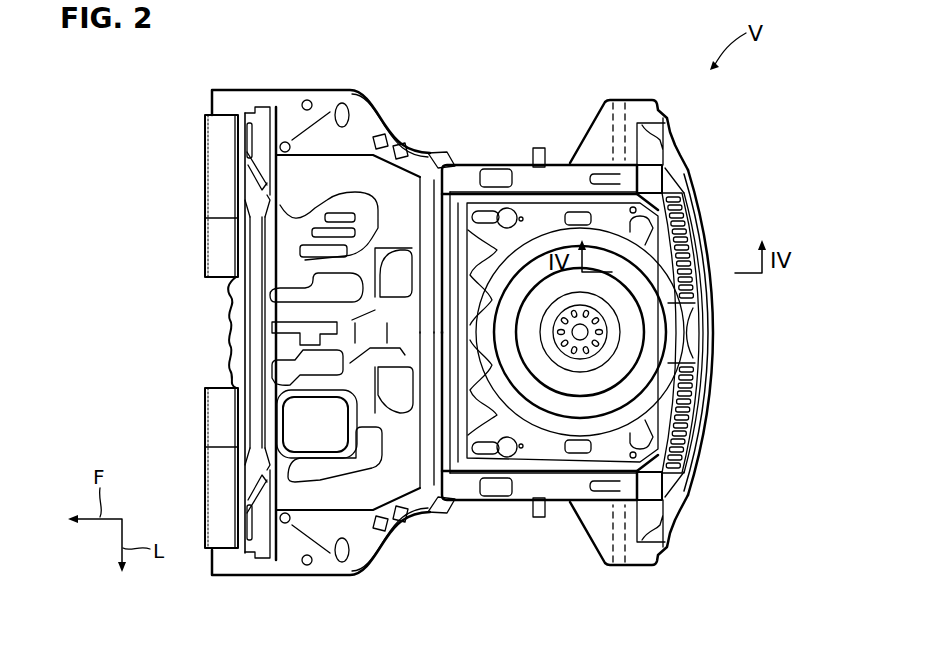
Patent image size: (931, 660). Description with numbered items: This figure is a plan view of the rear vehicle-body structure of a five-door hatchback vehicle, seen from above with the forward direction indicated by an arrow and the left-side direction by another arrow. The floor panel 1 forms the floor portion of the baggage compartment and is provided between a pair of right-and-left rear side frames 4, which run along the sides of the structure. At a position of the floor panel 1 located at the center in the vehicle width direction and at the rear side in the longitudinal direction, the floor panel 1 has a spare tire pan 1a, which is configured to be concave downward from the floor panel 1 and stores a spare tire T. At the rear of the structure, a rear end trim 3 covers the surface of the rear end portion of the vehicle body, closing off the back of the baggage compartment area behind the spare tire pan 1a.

The floor panel 1 is at (200, 215).
The spare tire pan 1a is at (560, 428).
The rear end trim 3 is at (703, 194).
The rear side frames 4 is at (512, 175).
The spare tire T is at (635, 385).